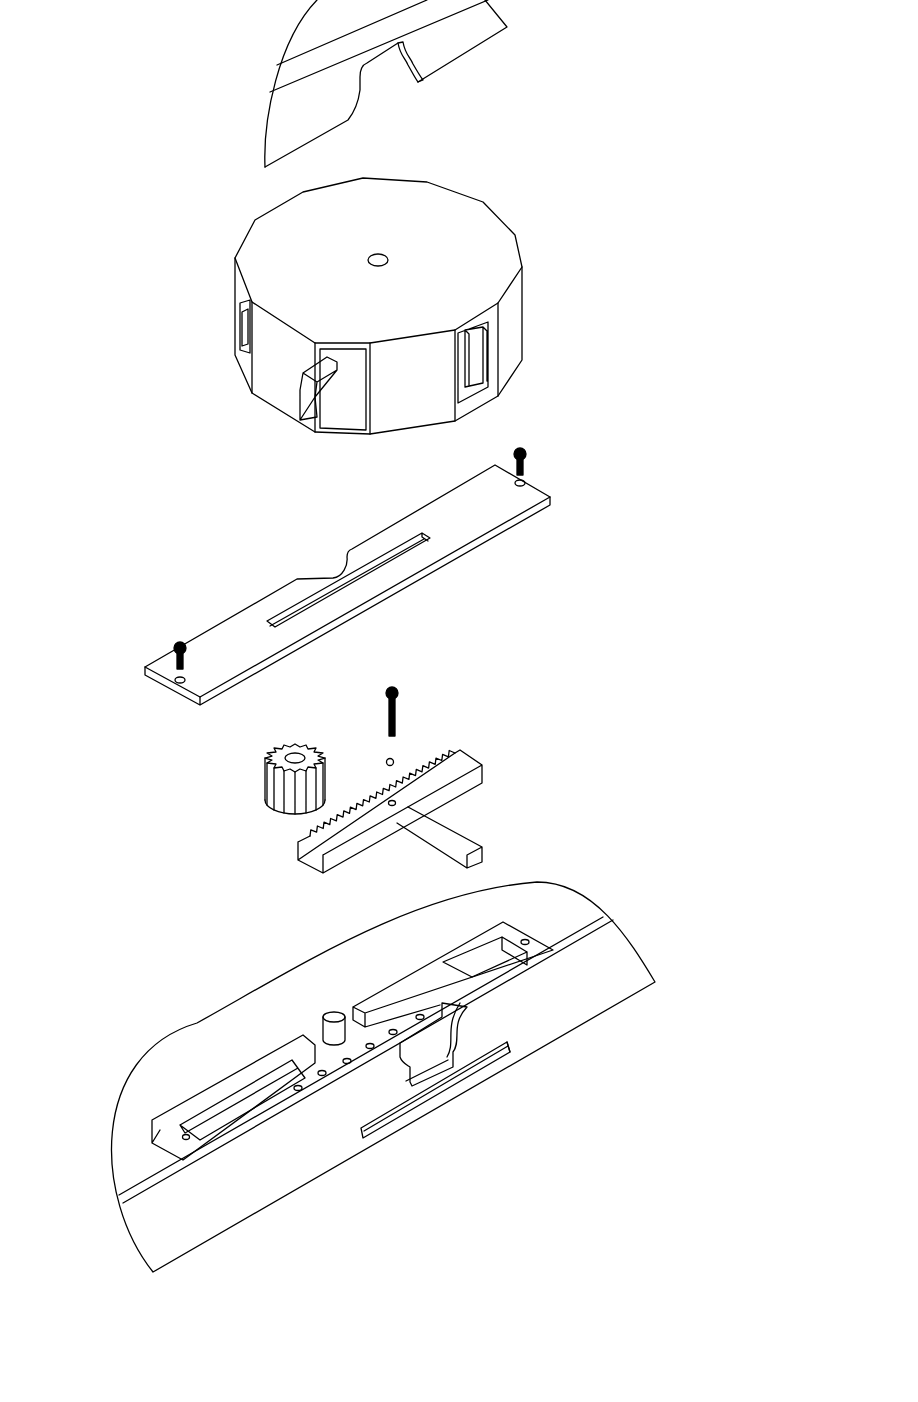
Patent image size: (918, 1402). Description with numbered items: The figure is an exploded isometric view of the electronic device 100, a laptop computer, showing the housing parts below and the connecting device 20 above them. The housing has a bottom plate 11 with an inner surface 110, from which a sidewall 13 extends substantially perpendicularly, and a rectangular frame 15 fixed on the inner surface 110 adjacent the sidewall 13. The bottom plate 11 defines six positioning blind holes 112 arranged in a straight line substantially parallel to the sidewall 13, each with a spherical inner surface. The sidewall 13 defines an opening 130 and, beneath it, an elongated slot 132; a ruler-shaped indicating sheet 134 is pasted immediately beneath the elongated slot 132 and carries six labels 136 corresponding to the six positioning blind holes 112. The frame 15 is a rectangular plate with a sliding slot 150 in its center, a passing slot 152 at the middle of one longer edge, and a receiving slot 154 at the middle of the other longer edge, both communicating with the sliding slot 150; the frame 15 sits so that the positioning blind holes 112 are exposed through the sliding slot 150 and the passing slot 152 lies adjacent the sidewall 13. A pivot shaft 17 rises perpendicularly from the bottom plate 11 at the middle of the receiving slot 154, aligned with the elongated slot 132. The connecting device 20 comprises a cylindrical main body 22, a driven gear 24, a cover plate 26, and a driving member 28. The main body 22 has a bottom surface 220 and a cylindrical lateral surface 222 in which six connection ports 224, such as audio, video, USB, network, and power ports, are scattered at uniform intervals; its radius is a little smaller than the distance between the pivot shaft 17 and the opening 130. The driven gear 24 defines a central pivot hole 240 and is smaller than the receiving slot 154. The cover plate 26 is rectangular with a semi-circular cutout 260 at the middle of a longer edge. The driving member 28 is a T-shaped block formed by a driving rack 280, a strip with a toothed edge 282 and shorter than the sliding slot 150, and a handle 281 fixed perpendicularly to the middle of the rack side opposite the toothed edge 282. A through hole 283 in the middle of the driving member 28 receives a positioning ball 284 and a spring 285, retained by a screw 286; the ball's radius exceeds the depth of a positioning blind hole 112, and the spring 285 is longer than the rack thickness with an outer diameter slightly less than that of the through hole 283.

The electronic device 100 is at (148, 58).
The bottom plate 11 is at (90, 1183).
The sidewall 13 is at (457, 40).
The inner surface 110 is at (128, 1126).
The positioning blind holes 112 is at (393, 1027).
The rectangular frame 15 is at (285, 1050).
The sliding slot 150 is at (247, 1110).
The passing slot 152 is at (440, 1027).
The receiving slot 154 is at (317, 1043).
The pivot shaft 17 is at (336, 1035).
The opening 130 is at (432, 1057).
The elongated slot 132 is at (505, 1052).
The indicating sheet 134 is at (378, 1137).
The labels 136 is at (420, 1113).
The connecting device 20 is at (75, 465).
The main body 22 is at (195, 433).
The bottom surface 220 is at (395, 432).
The lateral surface 222 is at (510, 319).
The connection ports 224 is at (468, 395).
The driven gear 24 is at (267, 777).
The central pivot hole 240 is at (297, 757).
The cover plate 26 is at (160, 668).
The semi-circular cutout 260 is at (330, 572).
The driving member 28 is at (318, 810).
The driving rack 280 is at (470, 760).
The handle 281 is at (450, 834).
The toothed edge 282 is at (447, 755).
The through hole 283 is at (399, 844).
The positioning ball 284 is at (388, 759).
The spring 285 is at (396, 722).
The screw 286 is at (388, 688).